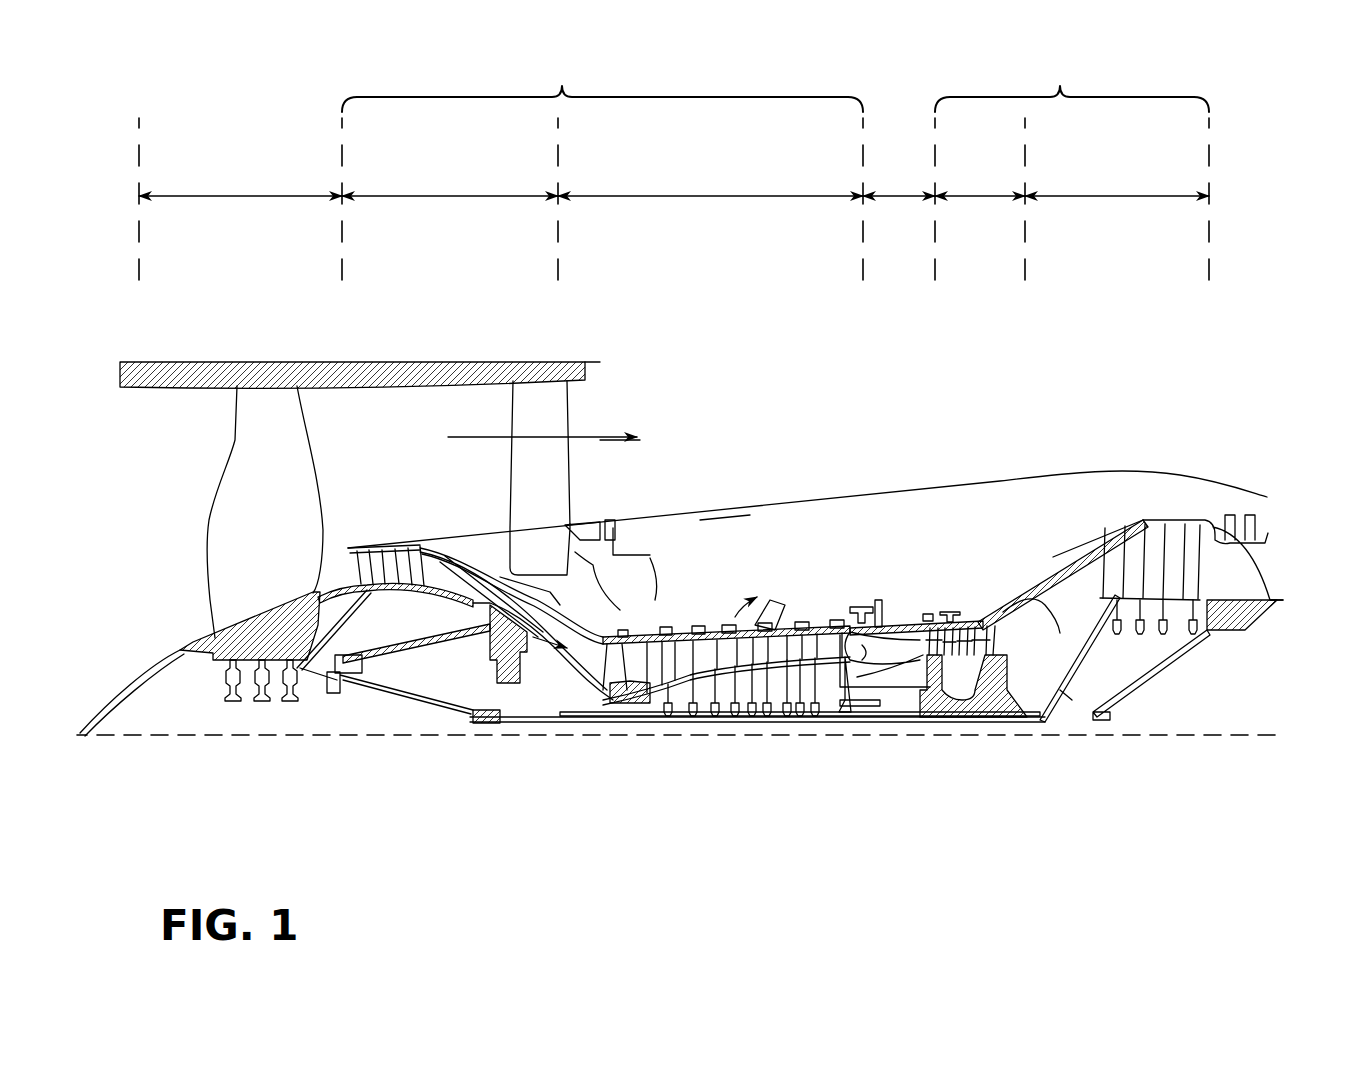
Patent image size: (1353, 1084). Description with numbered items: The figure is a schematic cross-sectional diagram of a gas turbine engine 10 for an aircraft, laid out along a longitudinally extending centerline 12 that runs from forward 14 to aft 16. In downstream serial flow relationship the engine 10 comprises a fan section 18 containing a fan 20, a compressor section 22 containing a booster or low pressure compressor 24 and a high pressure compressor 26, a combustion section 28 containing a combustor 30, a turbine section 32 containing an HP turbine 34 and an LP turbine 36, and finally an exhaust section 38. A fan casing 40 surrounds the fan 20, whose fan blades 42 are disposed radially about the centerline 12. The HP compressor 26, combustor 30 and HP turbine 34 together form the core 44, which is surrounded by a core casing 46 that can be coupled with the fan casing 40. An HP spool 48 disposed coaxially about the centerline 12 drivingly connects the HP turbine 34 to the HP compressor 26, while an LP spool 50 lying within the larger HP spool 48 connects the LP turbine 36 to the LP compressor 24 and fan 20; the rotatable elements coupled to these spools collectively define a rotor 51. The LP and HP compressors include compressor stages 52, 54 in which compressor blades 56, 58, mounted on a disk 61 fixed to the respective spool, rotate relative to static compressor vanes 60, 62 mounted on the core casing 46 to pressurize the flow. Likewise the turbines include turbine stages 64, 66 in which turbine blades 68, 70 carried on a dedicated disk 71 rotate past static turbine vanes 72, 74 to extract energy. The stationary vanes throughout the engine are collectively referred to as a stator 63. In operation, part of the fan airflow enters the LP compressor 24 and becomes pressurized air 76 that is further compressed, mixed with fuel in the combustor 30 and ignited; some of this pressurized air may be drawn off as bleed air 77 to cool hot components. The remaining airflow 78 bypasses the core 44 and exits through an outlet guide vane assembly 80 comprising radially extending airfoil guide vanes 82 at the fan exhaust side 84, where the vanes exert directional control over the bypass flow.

The gas turbine engine 10 is at (890, 355).
The centerline 12 is at (240, 736).
The forward 14 is at (86, 499).
The aft 16 is at (1300, 586).
The fan section 18 is at (240, 185).
The fan 20 is at (178, 577).
The compressor section 22 is at (602, 85).
The low pressure compressor 24 is at (450, 185).
The high pressure compressor 26 is at (710, 185).
The combustion section 28 is at (899, 177).
The combustor 30 is at (900, 647).
The turbine section 32 is at (1072, 85).
The HP turbine 34 is at (980, 185).
The LP turbine 36 is at (1117, 185).
The exhaust section 38 is at (1283, 540).
The fan casing 40 is at (383, 368).
The fan blades 42 is at (293, 443).
The core 44 is at (840, 537).
The core casing 46 is at (1077, 545).
The HP spool 48 is at (867, 723).
The LP spool 50 is at (490, 723).
The rotor 51 is at (747, 725).
The compressor stages 52 is at (405, 488).
The compressor stages 54 is at (713, 537).
The compressor blades 56 is at (377, 547).
The compressor blades 58 is at (637, 630).
The static compressor vanes 60 is at (357, 547).
The disk 61 is at (373, 587).
The static compressor vanes 62 is at (610, 627).
The stator 63 is at (617, 687).
The turbine stages 64 is at (930, 542).
The turbine stages 66 is at (1193, 417).
The turbine blades 68 is at (950, 633).
The turbine blades 70 is at (1193, 537).
The disk 71 is at (945, 700).
The static turbine vanes 72 is at (927, 640).
The static turbine vanes 74 is at (1173, 520).
The pressurized air 76 is at (543, 635).
The bleed air 77 is at (740, 600).
The airflow 78 is at (467, 430).
The outlet guide vane assembly 80 is at (587, 488).
The airfoil guide vanes 82 is at (522, 475).
The fan exhaust side 84 is at (612, 393).